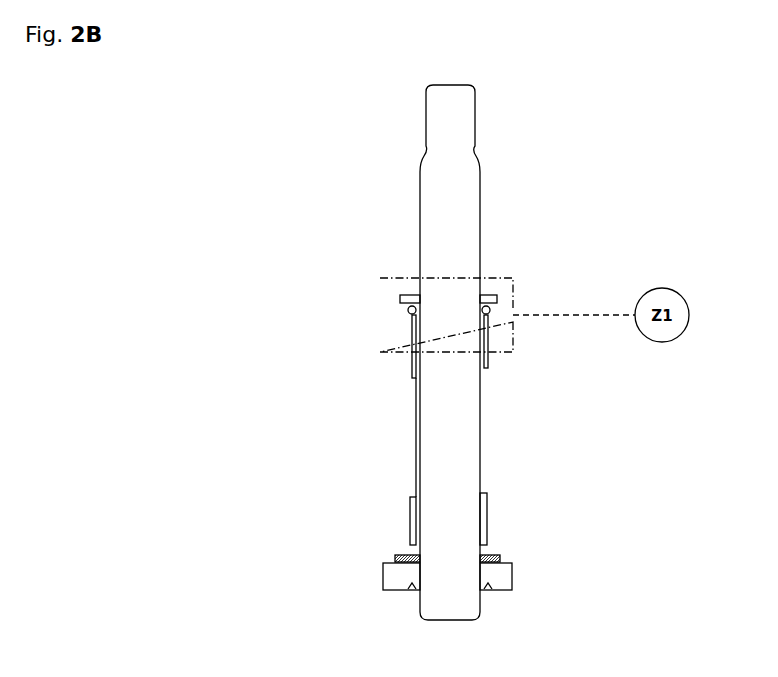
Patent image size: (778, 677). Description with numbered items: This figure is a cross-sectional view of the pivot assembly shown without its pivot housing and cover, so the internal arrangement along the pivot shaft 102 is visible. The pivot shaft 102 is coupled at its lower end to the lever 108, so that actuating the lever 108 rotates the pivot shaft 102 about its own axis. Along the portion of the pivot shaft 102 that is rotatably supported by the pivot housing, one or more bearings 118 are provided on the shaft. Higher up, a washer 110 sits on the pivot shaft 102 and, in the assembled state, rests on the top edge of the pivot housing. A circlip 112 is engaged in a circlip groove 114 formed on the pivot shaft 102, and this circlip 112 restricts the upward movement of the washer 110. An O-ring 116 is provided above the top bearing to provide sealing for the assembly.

The pivot shaft 102 is at (418, 180).
The lever 108 is at (398, 580).
The washer 110 is at (498, 302).
The circlip 112 is at (500, 296).
The circlip groove 114 is at (418, 293).
The O-ring 116 is at (414, 312).
The bearings 118 is at (418, 358).